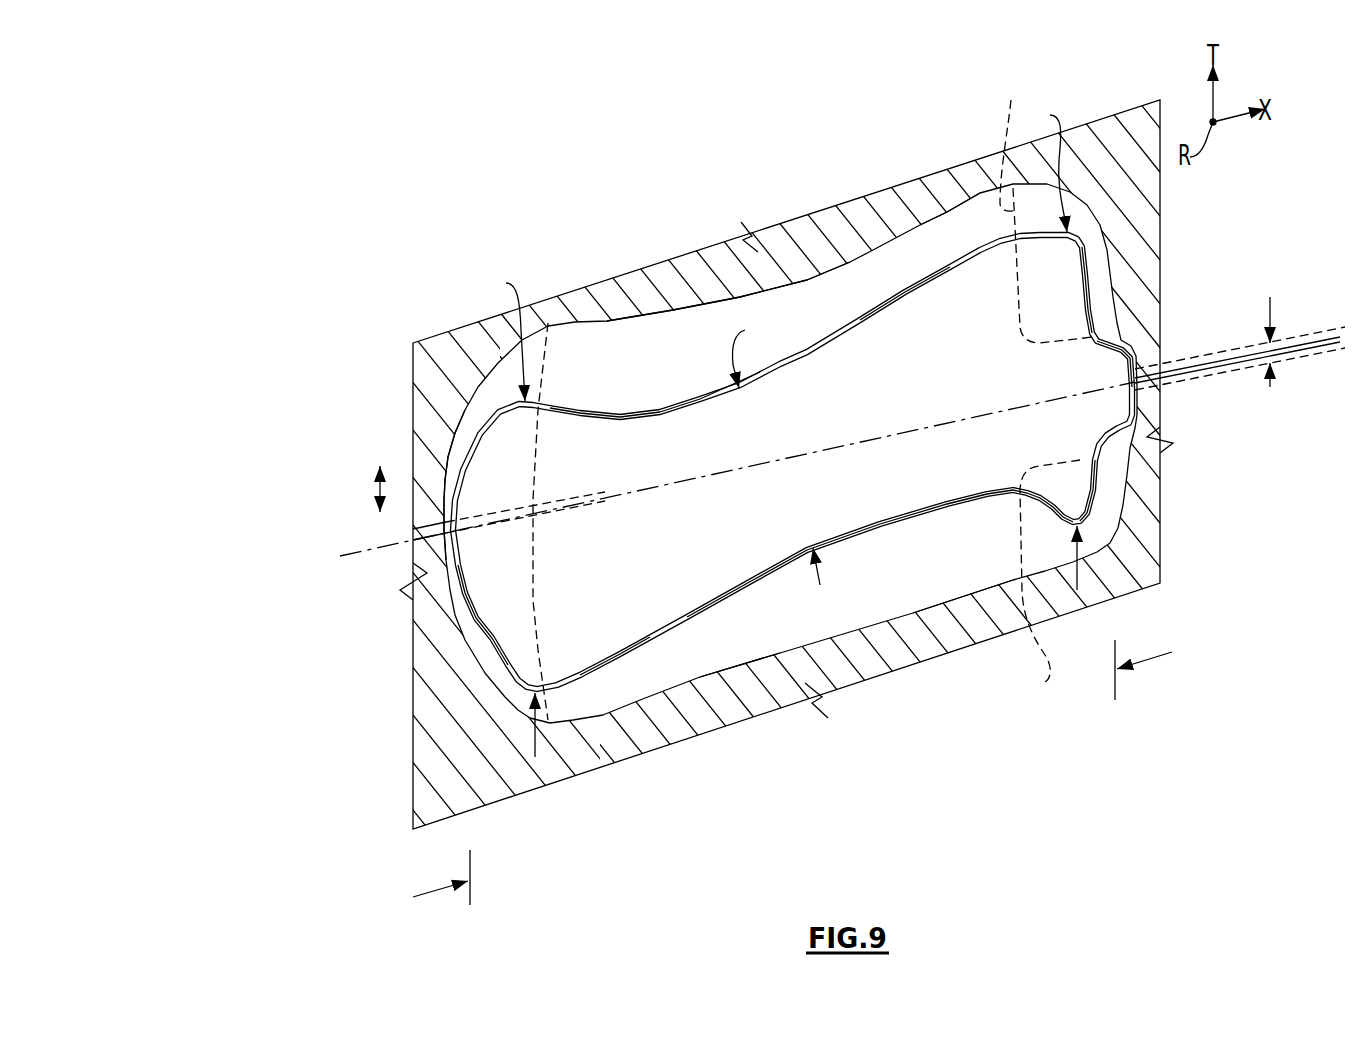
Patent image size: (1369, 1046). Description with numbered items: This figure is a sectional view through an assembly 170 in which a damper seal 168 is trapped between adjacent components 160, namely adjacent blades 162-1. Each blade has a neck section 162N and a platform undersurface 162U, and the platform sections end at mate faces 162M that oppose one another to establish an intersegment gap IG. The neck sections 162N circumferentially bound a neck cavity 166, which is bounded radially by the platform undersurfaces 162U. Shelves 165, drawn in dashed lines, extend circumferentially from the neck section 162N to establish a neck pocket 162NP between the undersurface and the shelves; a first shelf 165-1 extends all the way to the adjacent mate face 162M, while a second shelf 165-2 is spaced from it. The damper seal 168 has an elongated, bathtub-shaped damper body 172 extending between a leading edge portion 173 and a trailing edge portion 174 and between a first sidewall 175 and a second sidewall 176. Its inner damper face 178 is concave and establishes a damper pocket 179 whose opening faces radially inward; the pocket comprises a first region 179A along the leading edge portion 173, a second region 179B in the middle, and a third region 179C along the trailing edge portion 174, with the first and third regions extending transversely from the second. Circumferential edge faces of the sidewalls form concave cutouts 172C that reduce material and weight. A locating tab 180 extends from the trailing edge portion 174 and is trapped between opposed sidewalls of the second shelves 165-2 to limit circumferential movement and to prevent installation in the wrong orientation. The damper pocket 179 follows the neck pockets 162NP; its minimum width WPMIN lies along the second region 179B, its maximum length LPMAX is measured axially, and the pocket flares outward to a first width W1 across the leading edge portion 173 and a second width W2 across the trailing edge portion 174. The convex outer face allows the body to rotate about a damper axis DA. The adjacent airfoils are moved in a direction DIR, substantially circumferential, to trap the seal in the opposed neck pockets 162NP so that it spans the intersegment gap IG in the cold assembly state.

The component 160 is at (427, 366).
The blade 162-1 is at (684, 470).
The neck section 162N is at (473, 347).
The neck pocket 162NP is at (822, 277).
The platform undersurface 162U is at (960, 222).
The mate face 162M is at (1160, 375).
The shelf 165 is at (597, 820).
The first shelf 165-1 is at (520, 368).
The second shelf 165-2 is at (1011, 100).
The neck cavity 166 is at (689, 331).
The damper seal 168 is at (905, 290).
The assembly 170 is at (512, 158).
The damper body 172 is at (827, 517).
The cutout 172C is at (698, 395).
The leading edge portion 173 is at (433, 560).
The trailing edge portion 174 is at (1093, 310).
The first sidewall 175 is at (613, 667).
The second sidewall 176 is at (637, 414).
The inner damper face 178 is at (843, 537).
The damper pocket 179 is at (907, 467).
The first region 179A is at (490, 578).
The second region 179B is at (1006, 537).
The third region 179C is at (1080, 494).
The locating tab 180 is at (1140, 347).
The first width W1 is at (496, 330).
The second width W2 is at (1043, 164).
The minimum width WPMIN is at (776, 348).
The intersegment gap IG is at (1270, 387).
The direction DIR is at (379, 490).
The damper axis DA is at (352, 552).
The maximum length LPMAX is at (430, 890).